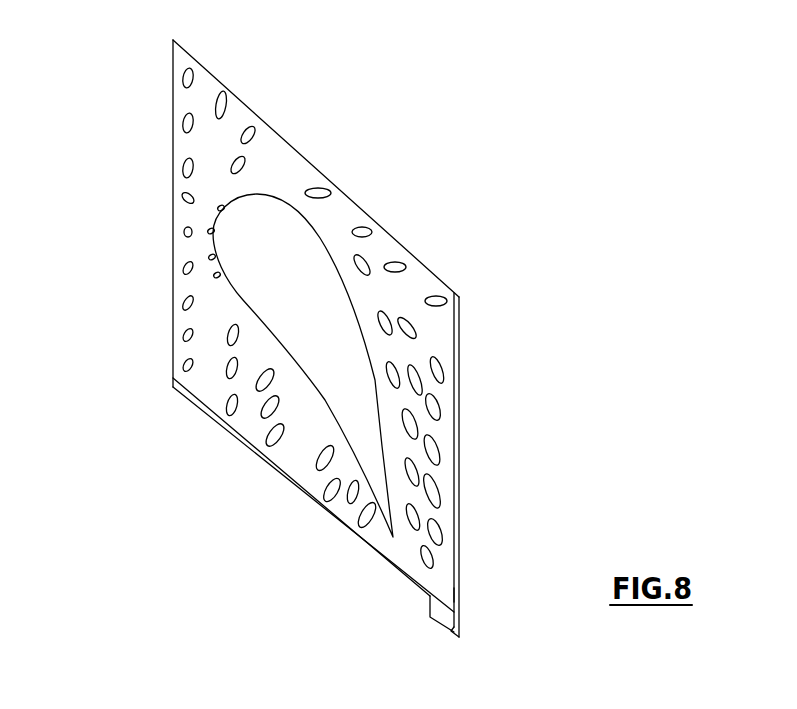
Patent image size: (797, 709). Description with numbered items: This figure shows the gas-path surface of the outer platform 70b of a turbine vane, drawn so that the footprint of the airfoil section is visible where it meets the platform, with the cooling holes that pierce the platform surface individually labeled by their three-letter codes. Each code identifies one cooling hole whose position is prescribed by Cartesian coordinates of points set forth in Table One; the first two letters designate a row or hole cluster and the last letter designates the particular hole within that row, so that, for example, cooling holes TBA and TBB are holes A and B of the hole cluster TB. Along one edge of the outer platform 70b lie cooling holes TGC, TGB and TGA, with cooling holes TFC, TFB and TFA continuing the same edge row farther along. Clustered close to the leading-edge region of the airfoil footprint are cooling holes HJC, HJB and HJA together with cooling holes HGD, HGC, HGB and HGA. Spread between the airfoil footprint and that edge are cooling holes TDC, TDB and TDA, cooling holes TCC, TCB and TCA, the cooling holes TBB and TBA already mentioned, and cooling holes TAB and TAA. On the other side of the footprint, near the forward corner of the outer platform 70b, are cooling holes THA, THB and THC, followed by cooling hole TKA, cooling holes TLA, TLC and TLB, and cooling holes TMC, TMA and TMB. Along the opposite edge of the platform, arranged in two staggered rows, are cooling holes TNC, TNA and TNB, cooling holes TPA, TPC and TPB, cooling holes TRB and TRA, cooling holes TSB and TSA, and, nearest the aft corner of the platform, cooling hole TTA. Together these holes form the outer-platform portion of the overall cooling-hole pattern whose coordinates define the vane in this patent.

The outer platform 70b is at (282, 176).
The cooling hole TGC is at (20, 37).
The cooling hole TGB is at (20, 77).
The cooling hole TGA is at (20, 117).
The cooling hole HJC is at (20, 156).
The cooling hole HGD is at (20, 195).
The cooling hole HGC is at (80, 218).
The cooling hole HJB is at (20, 247).
The cooling hole HGB is at (80, 268).
The cooling hole HJA is at (20, 297).
The cooling hole HGA is at (20, 337).
The cooling hole TFC is at (20, 385).
The cooling hole TFB is at (20, 433).
The cooling hole TFA is at (20, 480).
The cooling hole TDC is at (100, 478).
The cooling hole TDB is at (100, 512).
The cooling hole TDA is at (100, 545).
The cooling hole TCC is at (28, 570).
The cooling hole TCB is at (75, 593).
The cooling hole TCA is at (122, 613).
The cooling hole TBB is at (248, 563).
The cooling hole TBA is at (253, 595).
The cooling hole TAB is at (268, 650).
The cooling hole TAA is at (373, 660).
The cooling hole THA is at (263, 35).
The cooling hole THB is at (297, 68).
The cooling hole THC is at (343, 92).
The cooling hole TKA is at (390, 112).
The cooling hole TLA is at (397, 147).
The cooling hole TLC is at (440, 170).
The cooling hole TLB is at (487, 190).
The cooling hole TMC is at (533, 212).
The cooling hole TMA is at (578, 235).
The cooling hole TMB is at (627, 257).
The cooling hole TNC is at (535, 300).
The cooling hole TNA is at (557, 332).
The cooling hole TNB is at (597, 370).
The cooling hole TPA is at (555, 397).
The cooling hole TPC is at (492, 432).
The cooling hole TPB is at (555, 447).
The cooling hole TRB is at (480, 472).
The cooling hole TRA is at (555, 487).
The cooling hole TSB is at (573, 523).
The cooling hole TSA is at (523, 577).
The cooling hole TTA is at (522, 663).